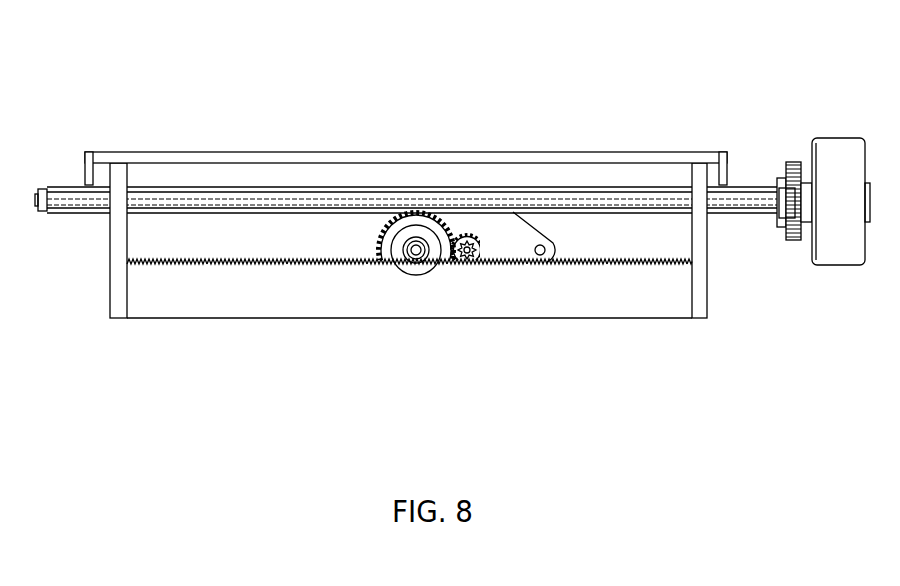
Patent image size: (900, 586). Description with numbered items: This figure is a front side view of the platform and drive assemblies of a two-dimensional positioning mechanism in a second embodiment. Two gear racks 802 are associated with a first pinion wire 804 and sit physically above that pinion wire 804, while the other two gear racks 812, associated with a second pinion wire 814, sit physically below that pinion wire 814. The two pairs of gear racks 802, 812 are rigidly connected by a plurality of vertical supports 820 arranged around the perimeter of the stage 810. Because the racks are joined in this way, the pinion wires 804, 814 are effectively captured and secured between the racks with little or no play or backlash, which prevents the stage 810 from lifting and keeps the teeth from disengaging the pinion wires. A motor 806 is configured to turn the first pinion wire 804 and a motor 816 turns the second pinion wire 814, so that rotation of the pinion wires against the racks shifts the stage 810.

The gear racks 802 is at (80, 181).
The first pinion wire 804 is at (191, 181).
The motor 806 is at (836, 180).
The stage 810 is at (496, 153).
The gear racks 812 is at (321, 268).
The second pinion wire 814 is at (398, 241).
The motor 816 is at (494, 246).
The vertical supports 820 is at (117, 237).